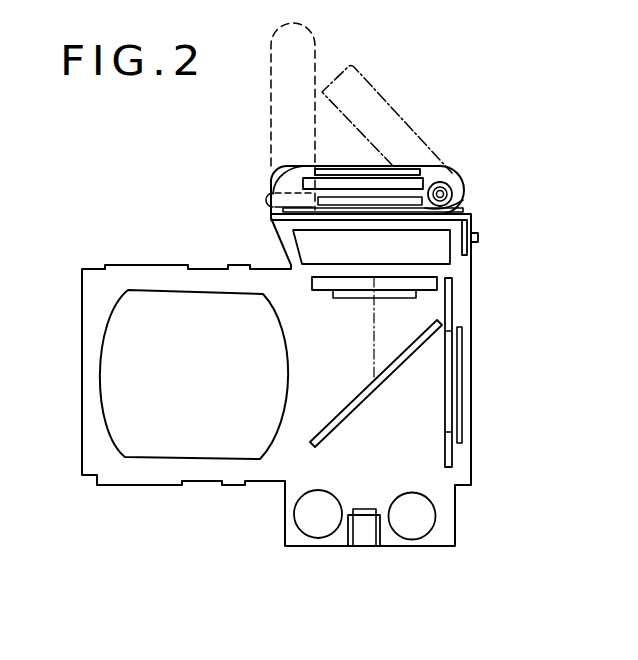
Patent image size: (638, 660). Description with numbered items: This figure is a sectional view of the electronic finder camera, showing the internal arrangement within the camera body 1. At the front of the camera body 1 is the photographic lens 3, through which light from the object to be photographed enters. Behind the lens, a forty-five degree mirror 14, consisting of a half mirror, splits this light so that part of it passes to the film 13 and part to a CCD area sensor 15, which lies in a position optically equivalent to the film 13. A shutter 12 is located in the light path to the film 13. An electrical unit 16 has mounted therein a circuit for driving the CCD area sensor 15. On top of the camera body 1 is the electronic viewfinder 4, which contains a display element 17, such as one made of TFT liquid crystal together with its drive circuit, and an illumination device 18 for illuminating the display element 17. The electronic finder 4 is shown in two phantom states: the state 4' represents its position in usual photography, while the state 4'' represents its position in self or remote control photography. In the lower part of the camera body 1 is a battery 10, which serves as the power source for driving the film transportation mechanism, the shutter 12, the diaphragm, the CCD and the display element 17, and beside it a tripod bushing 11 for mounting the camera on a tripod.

The camera body 1 is at (472, 312).
The photographic lens 3 is at (162, 433).
The electronic viewfinder 4 is at (364, 168).
The electronic finder in usual photography state 4' is at (387, 117).
The electronic finder in self or remote control photography state 4'' is at (321, 110).
The battery 10 is at (412, 530).
The tripod bushing 11 is at (363, 535).
The shutter 12 is at (447, 457).
The film 13 is at (462, 432).
The 45° mirror 14 is at (412, 350).
The CCD area sensor 15 is at (428, 283).
The electrical unit 16 is at (437, 259).
The display element 17 is at (421, 186).
The illumination device 18 is at (460, 204).